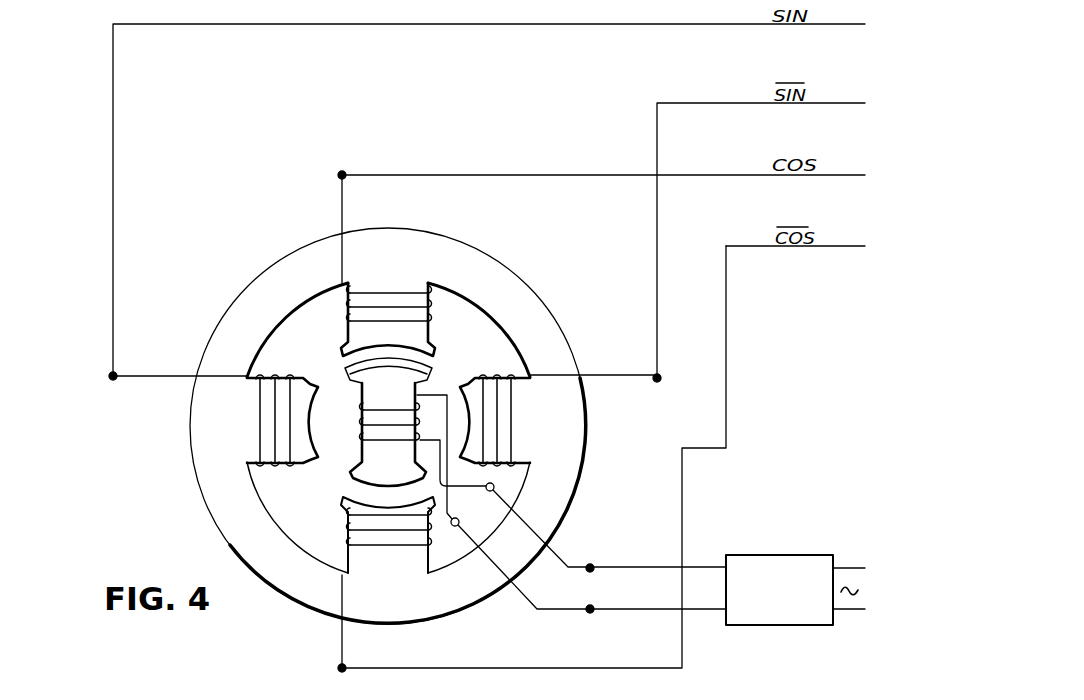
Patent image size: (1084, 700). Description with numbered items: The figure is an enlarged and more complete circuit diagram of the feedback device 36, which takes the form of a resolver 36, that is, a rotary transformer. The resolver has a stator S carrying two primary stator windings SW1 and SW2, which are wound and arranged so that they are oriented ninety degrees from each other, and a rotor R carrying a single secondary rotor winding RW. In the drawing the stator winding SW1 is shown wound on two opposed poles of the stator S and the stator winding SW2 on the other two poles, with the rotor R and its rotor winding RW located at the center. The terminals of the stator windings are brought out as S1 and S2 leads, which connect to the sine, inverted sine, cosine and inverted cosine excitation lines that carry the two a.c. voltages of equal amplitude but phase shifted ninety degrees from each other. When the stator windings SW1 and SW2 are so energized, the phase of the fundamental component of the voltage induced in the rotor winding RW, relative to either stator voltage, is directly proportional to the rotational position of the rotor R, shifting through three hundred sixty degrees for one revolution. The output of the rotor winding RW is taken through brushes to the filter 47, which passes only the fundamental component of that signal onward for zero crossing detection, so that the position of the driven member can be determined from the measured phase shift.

The feedback device 36 is at (252, 283).
The filter 47 is at (785, 531).
The stator S is at (237, 513).
The rotor R is at (372, 472).
The rotor winding RW is at (396, 402).
The stator winding SW1 is at (345, 307).
The stator winding SW2 is at (262, 412).
The stator terminal S1 is at (342, 423).
The stator terminal S2 is at (392, 391).